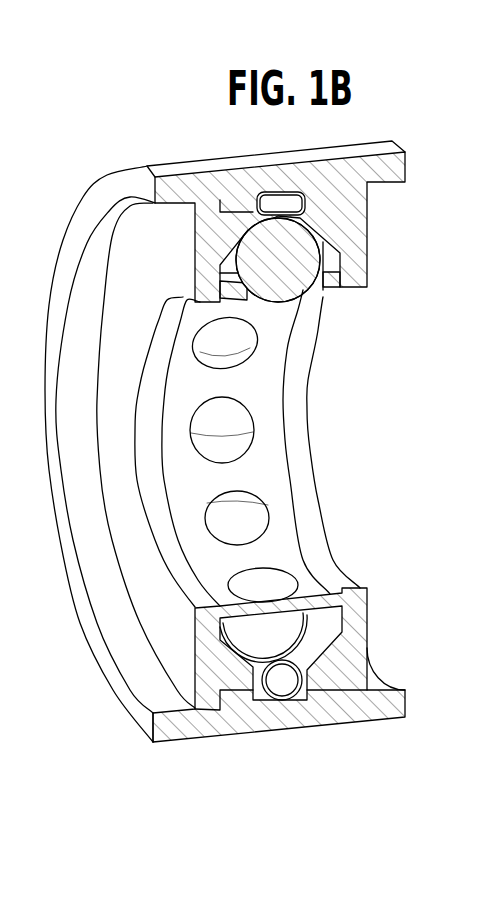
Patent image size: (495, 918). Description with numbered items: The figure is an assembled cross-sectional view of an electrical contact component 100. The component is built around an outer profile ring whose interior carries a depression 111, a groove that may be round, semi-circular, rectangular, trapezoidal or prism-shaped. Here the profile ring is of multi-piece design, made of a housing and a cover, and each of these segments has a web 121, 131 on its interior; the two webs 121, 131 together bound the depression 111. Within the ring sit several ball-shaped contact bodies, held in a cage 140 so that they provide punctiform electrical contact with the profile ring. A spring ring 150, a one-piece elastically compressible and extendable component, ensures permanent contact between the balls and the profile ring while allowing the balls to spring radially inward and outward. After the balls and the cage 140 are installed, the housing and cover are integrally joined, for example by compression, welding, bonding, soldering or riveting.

The electrical contact component 100 is at (172, 129).
The depression 111 is at (317, 633).
The web 121 is at (340, 230).
The web 131 is at (195, 251).
The cage 140 is at (257, 387).
The spring ring 150 is at (282, 686).